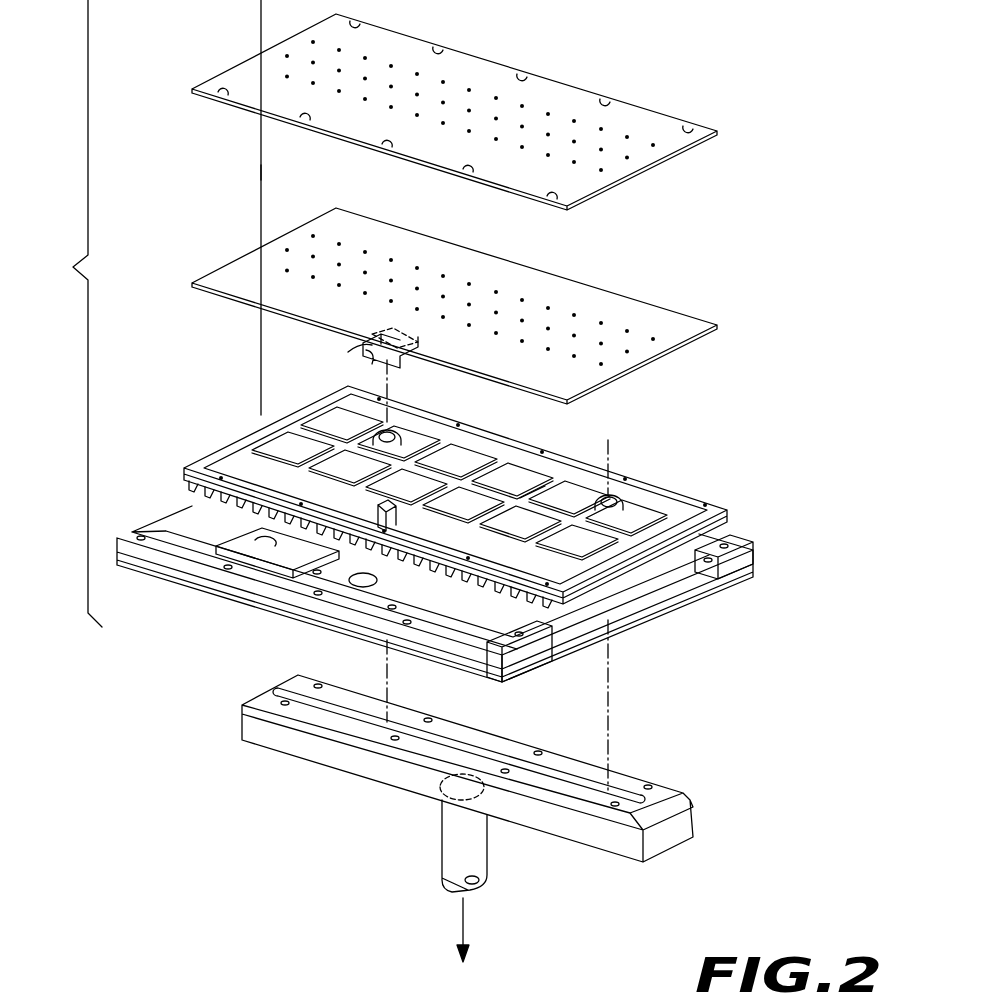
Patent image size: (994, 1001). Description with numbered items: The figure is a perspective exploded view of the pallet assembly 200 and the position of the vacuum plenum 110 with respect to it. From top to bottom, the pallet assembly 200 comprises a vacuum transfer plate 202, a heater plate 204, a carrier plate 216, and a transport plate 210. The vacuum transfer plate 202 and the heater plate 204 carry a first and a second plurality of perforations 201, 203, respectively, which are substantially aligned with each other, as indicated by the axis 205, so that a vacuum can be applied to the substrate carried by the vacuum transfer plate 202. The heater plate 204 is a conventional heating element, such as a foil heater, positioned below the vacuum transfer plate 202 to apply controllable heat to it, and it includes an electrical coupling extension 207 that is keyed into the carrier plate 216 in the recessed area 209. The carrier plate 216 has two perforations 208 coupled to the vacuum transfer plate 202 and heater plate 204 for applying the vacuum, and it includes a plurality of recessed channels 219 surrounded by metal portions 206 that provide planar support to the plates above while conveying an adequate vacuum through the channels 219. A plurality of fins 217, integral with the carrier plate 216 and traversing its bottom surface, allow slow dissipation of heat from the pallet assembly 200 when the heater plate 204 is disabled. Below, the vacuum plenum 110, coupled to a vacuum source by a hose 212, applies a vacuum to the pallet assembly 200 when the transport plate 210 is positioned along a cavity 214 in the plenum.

The pallet assembly 200 is at (63, 313).
The first plurality of perforations 201 is at (445, 106).
The vacuum transfer plate 202 is at (229, 65).
The second plurality of perforations 203 is at (416, 296).
The heater plate 204 is at (222, 265).
The axis 205 is at (261, 172).
The metal portions 206 is at (520, 478).
The electrical coupling extension 207 is at (347, 352).
The perforations 208 is at (383, 433).
The recessed area 209 is at (378, 512).
The transport plate 210 is at (663, 600).
The hose 212 is at (450, 833).
The cavity 214 is at (302, 695).
The carrier plate 216 is at (425, 497).
The fins 217 is at (191, 496).
The recessed channels 219 is at (530, 500).
The vacuum plenum 110 is at (495, 763).